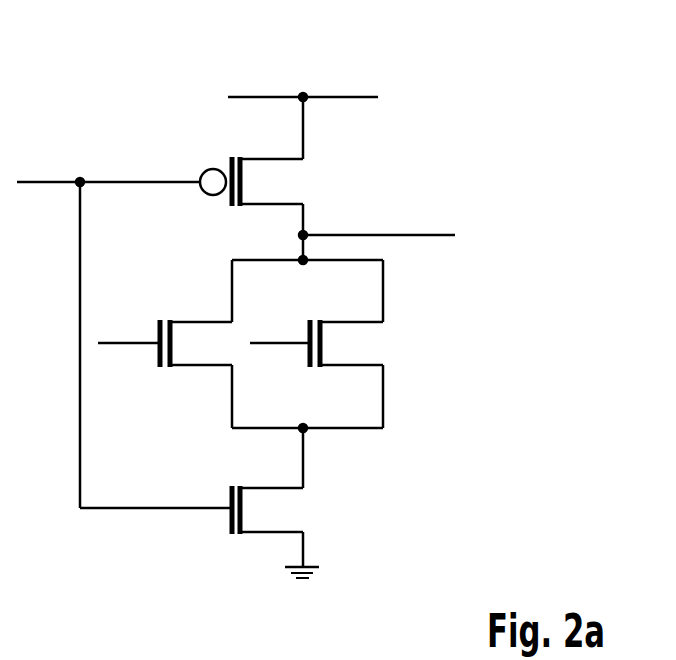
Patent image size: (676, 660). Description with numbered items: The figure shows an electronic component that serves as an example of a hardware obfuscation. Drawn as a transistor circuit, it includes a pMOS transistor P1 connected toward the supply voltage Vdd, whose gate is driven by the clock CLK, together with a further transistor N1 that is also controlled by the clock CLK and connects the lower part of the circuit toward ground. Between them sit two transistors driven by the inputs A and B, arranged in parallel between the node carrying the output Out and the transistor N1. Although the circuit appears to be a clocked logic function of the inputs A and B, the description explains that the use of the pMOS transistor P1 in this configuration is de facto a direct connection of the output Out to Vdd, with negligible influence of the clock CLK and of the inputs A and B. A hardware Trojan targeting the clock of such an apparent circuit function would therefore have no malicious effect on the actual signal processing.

The pMOS transistor P1 is at (272, 203).
The NMOS clock transistor N1 is at (305, 538).
The input A is at (127, 343).
The input B is at (280, 343).
The clock CLK is at (55, 180).
The supply voltage Vdd is at (330, 97).
The output Out is at (408, 237).